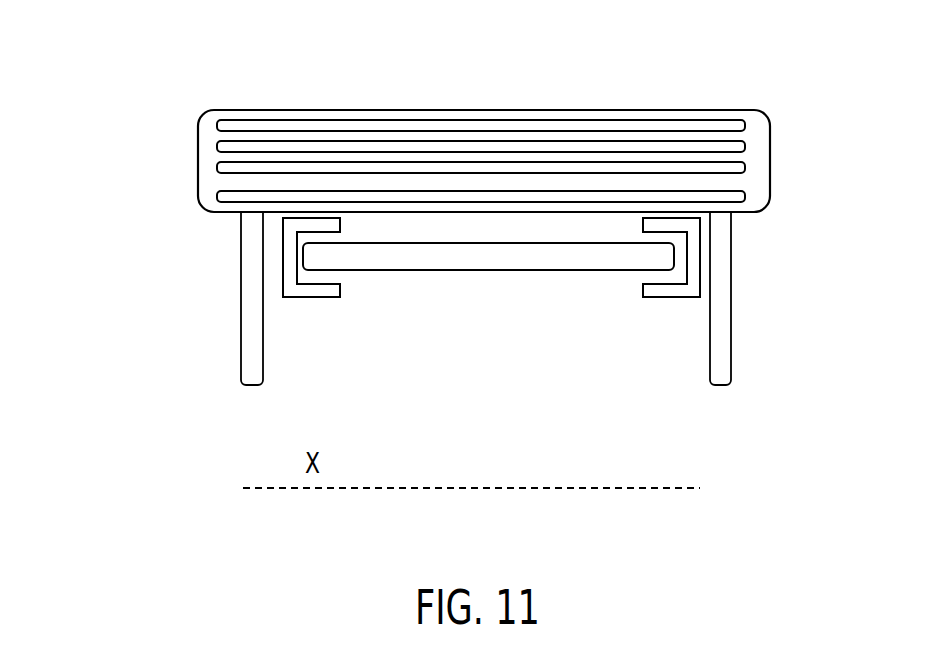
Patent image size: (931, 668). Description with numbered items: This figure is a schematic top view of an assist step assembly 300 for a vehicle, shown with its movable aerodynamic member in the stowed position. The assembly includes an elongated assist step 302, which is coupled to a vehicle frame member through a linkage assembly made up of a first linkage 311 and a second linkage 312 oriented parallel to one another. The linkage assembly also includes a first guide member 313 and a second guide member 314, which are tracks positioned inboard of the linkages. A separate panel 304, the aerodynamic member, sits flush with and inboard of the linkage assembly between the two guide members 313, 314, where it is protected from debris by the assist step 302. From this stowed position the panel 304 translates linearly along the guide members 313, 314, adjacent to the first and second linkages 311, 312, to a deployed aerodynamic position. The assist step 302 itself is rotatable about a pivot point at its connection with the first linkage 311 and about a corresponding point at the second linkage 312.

The assist step assembly 300 is at (116, 82).
The assist step 302 is at (375, 135).
The panel 304 is at (400, 272).
The first linkage 311 is at (241, 373).
The second linkage 312 is at (709, 372).
The first guide member 313 is at (288, 227).
The second guide member 314 is at (687, 226).